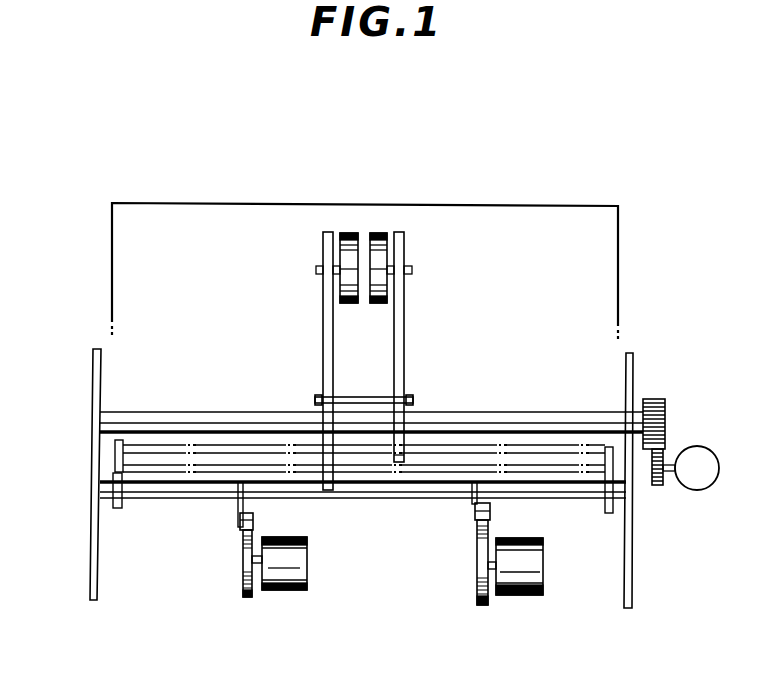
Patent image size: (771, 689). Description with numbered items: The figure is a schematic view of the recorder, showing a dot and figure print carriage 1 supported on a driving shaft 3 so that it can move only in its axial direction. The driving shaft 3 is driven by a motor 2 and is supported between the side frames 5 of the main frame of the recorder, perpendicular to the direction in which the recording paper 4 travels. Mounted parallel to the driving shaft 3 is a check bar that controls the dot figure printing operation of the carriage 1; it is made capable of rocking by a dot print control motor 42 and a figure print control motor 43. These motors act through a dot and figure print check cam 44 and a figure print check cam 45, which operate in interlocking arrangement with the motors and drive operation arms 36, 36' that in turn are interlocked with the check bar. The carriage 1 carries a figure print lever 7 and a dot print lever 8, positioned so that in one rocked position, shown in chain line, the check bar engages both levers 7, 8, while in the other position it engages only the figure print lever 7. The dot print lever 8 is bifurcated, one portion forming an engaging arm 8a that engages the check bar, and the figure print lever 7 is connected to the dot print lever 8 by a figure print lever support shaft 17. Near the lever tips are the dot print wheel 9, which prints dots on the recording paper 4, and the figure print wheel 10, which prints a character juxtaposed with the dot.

The dot and figure print carriage 1 is at (426, 333).
The motor 2 is at (712, 486).
The driving shaft 3 is at (536, 422).
The recording paper 4 is at (293, 204).
The side frames 5 is at (92, 565).
The figure print lever 7 is at (323, 364).
The dot print lever 8 is at (404, 374).
The engaging arm 8a is at (400, 462).
The dot print wheel 9 is at (382, 233).
The figure print wheel 10 is at (351, 233).
The figure print lever support shaft 17 is at (413, 400).
The operation arm 36 is at (226, 525).
The operation arm 36' is at (455, 522).
The dot print control motor 42 is at (307, 560).
The figure print control motor 43 is at (521, 575).
The dot and figure print check cam 44 is at (248, 597).
The figure print check cam 45 is at (478, 585).